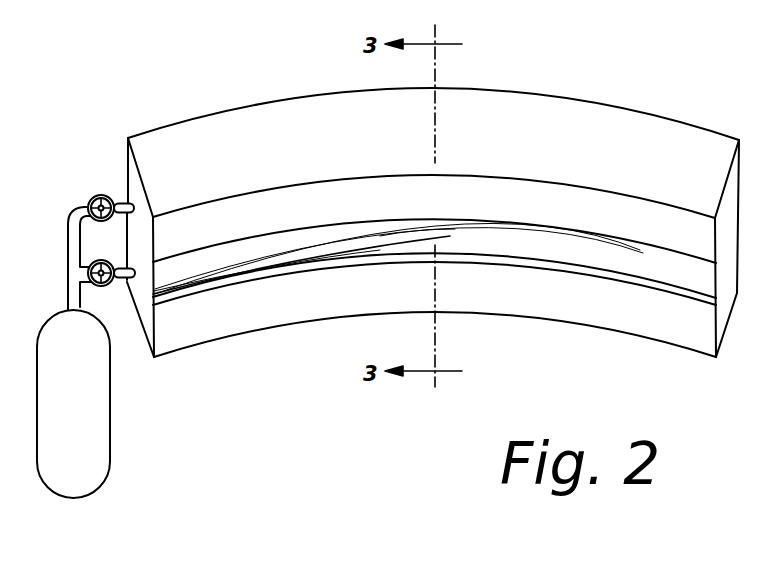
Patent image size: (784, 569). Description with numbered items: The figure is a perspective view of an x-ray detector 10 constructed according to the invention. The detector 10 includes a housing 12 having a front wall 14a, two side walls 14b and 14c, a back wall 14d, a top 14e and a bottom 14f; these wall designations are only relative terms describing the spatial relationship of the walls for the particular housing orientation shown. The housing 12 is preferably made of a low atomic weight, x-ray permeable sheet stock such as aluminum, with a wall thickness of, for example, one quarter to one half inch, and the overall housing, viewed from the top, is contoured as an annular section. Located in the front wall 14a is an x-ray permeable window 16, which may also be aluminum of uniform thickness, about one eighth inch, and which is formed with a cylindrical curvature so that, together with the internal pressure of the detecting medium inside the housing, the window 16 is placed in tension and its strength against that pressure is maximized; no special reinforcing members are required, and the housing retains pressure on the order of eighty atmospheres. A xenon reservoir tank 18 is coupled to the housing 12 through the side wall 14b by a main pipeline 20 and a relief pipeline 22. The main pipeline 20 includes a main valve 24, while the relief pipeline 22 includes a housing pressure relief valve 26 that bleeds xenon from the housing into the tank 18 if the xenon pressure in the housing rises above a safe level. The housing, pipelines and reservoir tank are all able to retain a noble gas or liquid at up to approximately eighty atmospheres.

The detector 10 is at (262, 66).
The housing 12 is at (442, 227).
The front wall 14a is at (537, 307).
The side wall 14b is at (147, 323).
The side wall 14c is at (719, 358).
The back wall 14d is at (647, 113).
The top 14e is at (508, 98).
The bottom 14f is at (608, 332).
The x-ray permeable window 16 is at (720, 259).
The xenon reservoir tank 18 is at (112, 427).
The main pipeline 20 is at (122, 202).
The relief pipeline 22 is at (127, 283).
The main valve 24 is at (95, 195).
The housing pressure relief valve 26 is at (115, 262).